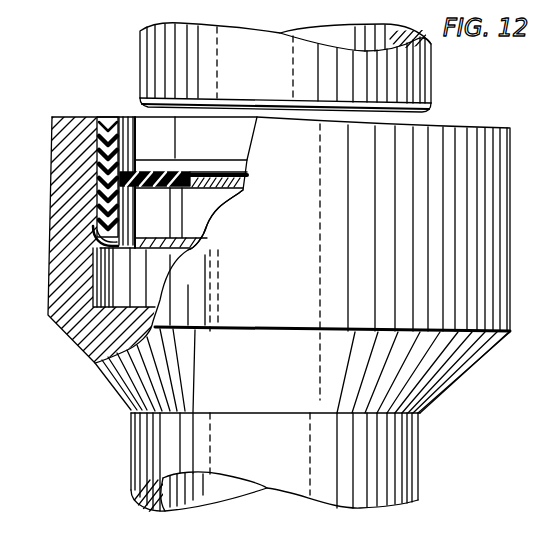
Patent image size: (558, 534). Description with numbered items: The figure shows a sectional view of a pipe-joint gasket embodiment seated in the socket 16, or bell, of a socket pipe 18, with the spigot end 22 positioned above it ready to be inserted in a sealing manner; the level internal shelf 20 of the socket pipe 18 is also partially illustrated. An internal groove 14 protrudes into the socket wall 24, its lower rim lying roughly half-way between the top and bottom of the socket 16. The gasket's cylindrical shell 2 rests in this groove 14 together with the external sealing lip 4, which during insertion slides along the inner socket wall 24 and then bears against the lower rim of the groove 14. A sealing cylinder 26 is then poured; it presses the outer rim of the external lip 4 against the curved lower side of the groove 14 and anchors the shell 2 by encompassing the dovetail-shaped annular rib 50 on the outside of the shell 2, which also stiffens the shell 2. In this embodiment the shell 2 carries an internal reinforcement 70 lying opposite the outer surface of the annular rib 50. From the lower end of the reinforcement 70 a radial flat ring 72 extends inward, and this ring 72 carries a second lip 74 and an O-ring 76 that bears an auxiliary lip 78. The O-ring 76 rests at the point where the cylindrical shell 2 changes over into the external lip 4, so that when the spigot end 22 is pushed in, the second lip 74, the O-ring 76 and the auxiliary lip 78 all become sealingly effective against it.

The spigot end 22 is at (152, 43).
The socket 16 is at (62, 263).
The socket pipe 18 is at (152, 433).
The internal shelf 20 is at (160, 305).
The cylindrical shell 2 is at (118, 135).
The sealing cylinder 26 is at (117, 117).
The annular rib 50 is at (100, 162).
The internal groove 14 is at (97, 230).
The internal reinforcement 70 is at (135, 160).
The second lip 74 is at (165, 172).
The auxiliary lip 78 is at (233, 181).
The radial flat ring 72 is at (170, 217).
The O-ring 76 is at (187, 197).
The external sealing lip 4 is at (102, 248).
The socket wall 24 is at (97, 288).